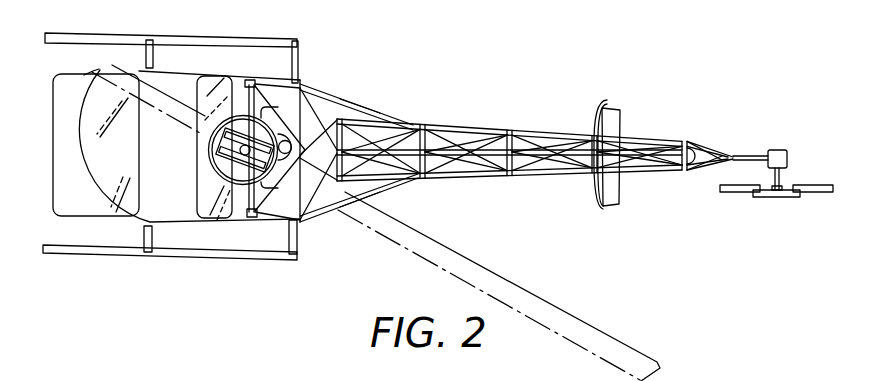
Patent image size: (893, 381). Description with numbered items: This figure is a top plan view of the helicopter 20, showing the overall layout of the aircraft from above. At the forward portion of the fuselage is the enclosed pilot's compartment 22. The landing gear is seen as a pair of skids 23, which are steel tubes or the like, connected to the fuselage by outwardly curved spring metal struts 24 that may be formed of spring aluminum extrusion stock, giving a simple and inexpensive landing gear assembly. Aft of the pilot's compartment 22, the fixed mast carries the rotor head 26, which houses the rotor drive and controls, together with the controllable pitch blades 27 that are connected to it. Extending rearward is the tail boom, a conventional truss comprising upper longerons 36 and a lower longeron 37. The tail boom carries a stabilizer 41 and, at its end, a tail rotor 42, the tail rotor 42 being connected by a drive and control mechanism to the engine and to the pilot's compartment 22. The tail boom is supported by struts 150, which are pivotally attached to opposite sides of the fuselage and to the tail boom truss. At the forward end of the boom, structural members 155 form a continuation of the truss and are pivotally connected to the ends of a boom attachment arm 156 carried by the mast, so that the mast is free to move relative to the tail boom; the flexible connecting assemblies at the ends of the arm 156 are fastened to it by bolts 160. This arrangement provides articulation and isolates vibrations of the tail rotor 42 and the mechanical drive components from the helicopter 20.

The helicopter 20 is at (543, 147).
The pilot's compartment 22 is at (68, 84).
The skids 23 is at (226, 38).
The struts 24 is at (153, 58).
The rotor head 26 is at (226, 108).
The controllable pitch blades 27 is at (569, 311).
The upper longerons 36 is at (521, 133).
The lower longeron 37 is at (497, 158).
The stabilizer 41 is at (592, 130).
The tail rotor 42 is at (746, 192).
The struts 150 is at (383, 112).
The structural members 155 is at (311, 118).
The boom attachment arm 156 is at (222, 159).
The bolts 160 is at (362, 225).